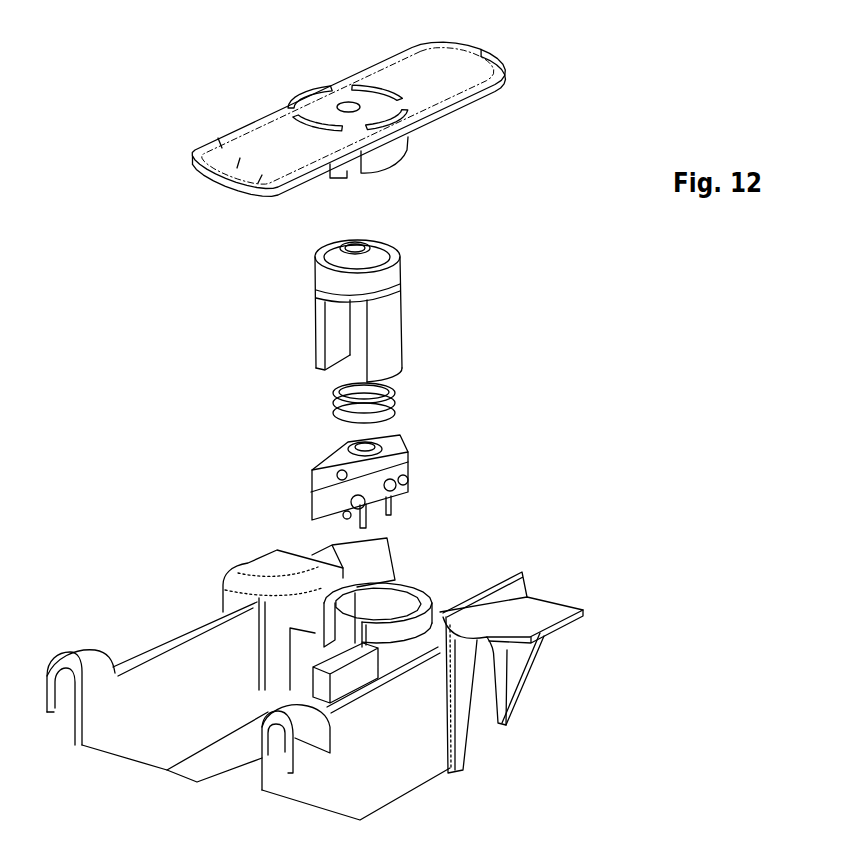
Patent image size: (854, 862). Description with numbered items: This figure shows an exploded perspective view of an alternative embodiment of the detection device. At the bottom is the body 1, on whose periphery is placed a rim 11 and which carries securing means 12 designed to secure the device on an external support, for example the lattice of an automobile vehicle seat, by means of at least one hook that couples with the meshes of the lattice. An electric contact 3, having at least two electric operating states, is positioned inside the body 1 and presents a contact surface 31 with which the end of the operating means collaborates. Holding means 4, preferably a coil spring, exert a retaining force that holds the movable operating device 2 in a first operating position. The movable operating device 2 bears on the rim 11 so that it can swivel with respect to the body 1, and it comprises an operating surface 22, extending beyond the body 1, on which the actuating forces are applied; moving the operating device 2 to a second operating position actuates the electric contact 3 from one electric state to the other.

The body 1 is at (378, 647).
The movable operating device 2 is at (532, 105).
The electric contact 3 is at (402, 395).
The holding means 4 is at (365, 407).
The rim 11 is at (325, 615).
The securing means 12 is at (550, 569).
The operating surface 22 is at (350, 104).
The contact surface 31 is at (316, 258).